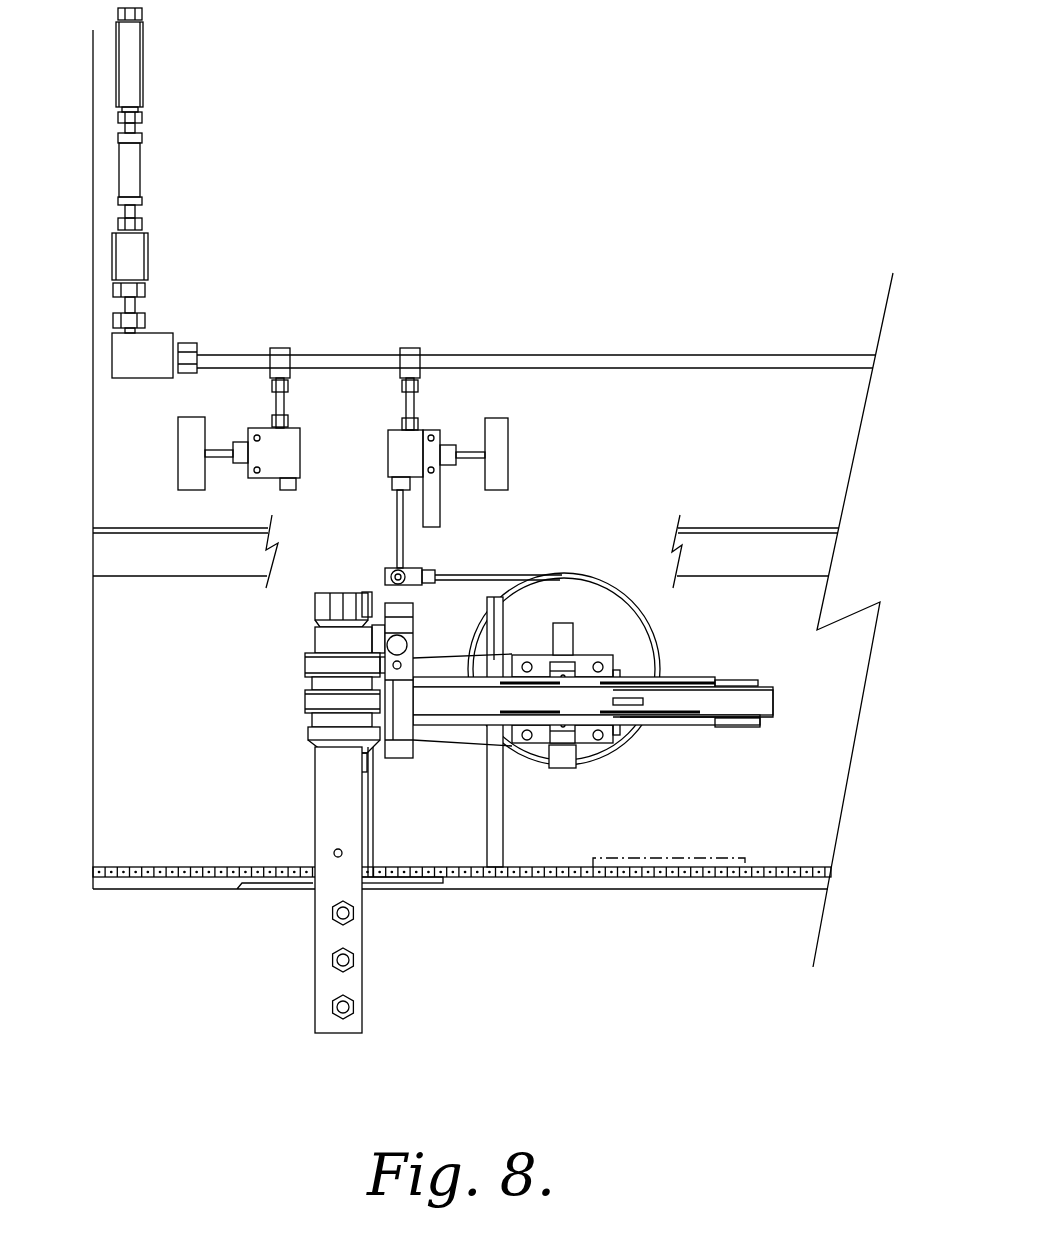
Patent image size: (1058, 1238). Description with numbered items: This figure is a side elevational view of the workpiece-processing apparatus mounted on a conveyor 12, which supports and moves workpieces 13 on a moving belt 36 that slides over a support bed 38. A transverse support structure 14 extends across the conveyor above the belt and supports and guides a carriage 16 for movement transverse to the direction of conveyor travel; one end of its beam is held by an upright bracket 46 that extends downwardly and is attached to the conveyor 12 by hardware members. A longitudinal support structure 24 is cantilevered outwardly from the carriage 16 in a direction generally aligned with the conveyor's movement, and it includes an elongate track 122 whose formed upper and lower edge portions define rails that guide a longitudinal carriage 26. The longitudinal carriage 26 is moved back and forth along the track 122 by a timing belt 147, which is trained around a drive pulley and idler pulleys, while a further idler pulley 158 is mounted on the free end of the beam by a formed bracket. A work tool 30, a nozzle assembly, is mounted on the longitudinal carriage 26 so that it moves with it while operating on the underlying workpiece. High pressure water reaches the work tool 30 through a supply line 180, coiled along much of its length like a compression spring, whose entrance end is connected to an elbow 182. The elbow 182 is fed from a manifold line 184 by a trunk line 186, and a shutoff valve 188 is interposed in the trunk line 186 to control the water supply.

The conveyor 12 is at (698, 902).
The workpieces 13 is at (718, 858).
The support structure 14 is at (257, 714).
The carriage 16 is at (400, 768).
The longitudinal support structure 24 is at (692, 668).
The longitudinal carriage 26 is at (622, 757).
The work tool 30 is at (578, 638).
The moving belt 36 is at (807, 867).
The support bed 38 is at (777, 888).
The upright bracket 46 is at (327, 977).
The track 122 is at (700, 733).
The timing belt 147 is at (767, 705).
The idler pulley 158 is at (773, 688).
The supply line 180 is at (648, 624).
The elbow 182 is at (392, 572).
The manifold line 184 is at (537, 353).
The trunk line 186 is at (408, 402).
The shutoff valve 188 is at (508, 453).